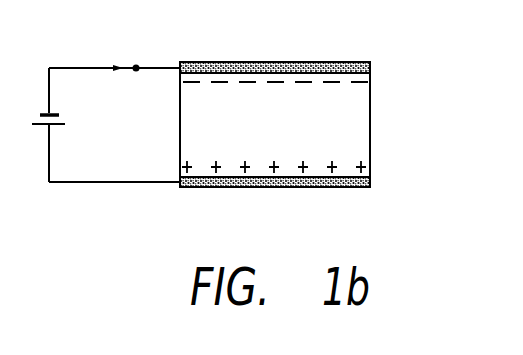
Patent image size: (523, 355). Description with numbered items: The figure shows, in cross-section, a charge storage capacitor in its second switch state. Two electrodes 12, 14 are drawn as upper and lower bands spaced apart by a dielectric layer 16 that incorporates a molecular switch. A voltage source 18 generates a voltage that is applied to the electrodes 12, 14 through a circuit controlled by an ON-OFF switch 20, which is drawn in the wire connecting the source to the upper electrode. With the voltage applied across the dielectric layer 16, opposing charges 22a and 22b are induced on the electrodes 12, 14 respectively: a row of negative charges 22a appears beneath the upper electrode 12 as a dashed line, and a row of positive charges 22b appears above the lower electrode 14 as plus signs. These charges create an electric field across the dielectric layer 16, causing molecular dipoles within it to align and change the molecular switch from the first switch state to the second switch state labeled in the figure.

The electrode 12 is at (243, 62).
The electrode 14 is at (328, 188).
The dielectric layer 16 is at (180, 110).
The voltage source 18 is at (46, 127).
The ON-OFF switch 20 is at (68, 67).
The opposing charges (−) 22a is at (302, 82).
The opposing charges (+) 22b is at (365, 165).